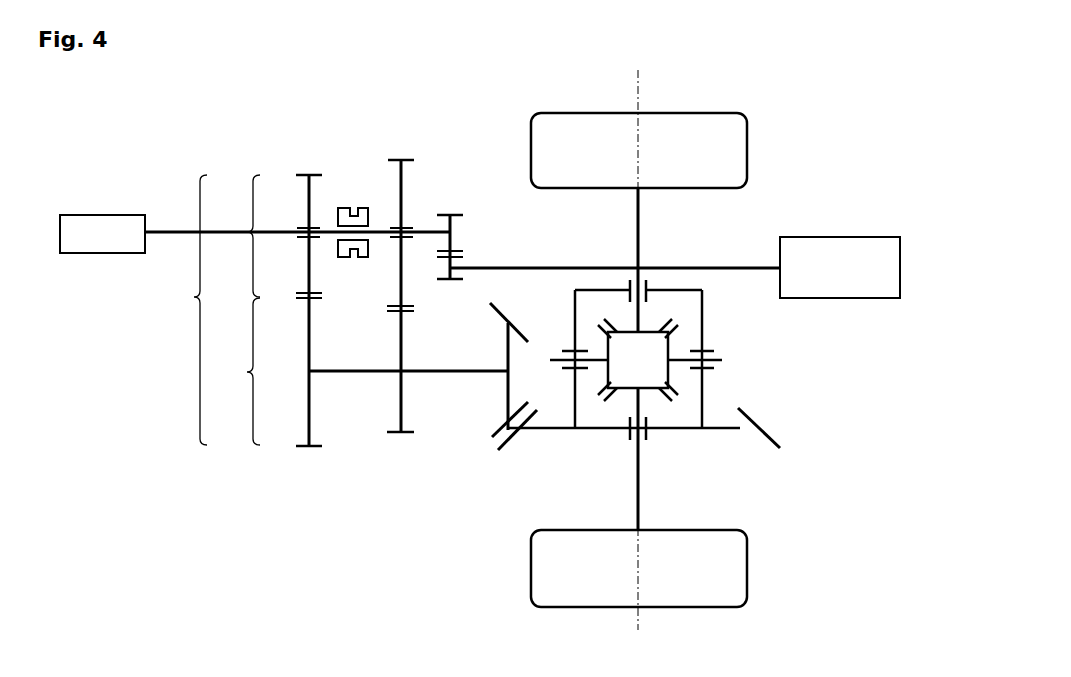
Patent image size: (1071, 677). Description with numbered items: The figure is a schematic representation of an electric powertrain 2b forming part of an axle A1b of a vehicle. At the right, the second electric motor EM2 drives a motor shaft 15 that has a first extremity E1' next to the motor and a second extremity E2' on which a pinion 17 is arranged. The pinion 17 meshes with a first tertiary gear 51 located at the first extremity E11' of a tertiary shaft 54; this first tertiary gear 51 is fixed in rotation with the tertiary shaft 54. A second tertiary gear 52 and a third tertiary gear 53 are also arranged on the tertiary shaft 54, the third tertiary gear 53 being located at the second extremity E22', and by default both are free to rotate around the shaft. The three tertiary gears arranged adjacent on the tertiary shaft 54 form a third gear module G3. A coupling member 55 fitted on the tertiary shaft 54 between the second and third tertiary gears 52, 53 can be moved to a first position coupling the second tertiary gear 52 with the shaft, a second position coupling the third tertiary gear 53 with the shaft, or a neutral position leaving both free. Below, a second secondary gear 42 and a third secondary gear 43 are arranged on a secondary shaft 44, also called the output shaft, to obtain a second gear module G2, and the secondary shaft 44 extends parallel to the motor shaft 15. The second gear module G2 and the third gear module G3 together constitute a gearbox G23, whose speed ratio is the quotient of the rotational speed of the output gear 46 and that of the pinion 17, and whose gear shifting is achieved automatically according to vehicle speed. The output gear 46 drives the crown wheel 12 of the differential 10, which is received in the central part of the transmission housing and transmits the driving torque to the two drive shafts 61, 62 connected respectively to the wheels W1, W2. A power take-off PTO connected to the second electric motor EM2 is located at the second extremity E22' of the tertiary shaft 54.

The differential 10 is at (768, 374).
The crown wheel 12 is at (732, 430).
The motor shaft 15 is at (558, 268).
The pinion 17 is at (462, 279).
The electric powertrain 2b is at (871, 407).
The second secondary gear 42 is at (400, 403).
The third secondary gear 43 is at (303, 413).
The secondary shaft 44 is at (357, 373).
The output gear 46 is at (505, 392).
The first tertiary gear 51 is at (455, 222).
The second tertiary gear 52 is at (405, 195).
The third tertiary gear 53 is at (305, 196).
The tertiary shaft 54 is at (328, 232).
The coupling member 55 is at (355, 258).
The drive shaft 61 is at (640, 470).
The drive shaft 62 is at (642, 207).
The axle A1b is at (664, 350).
The wheel W1 is at (747, 556).
The wheel W2 is at (747, 140).
The first extremity E1' is at (758, 233).
The second extremity E2' is at (532, 297).
The first extremity E11' is at (474, 210).
The second extremity E22' is at (288, 191).
The second gear module G2 is at (236, 371).
The third gear module G3 is at (236, 236).
The gearbox G23 is at (177, 310).
The power take-off PTO is at (102, 234).
The second electric motor EM2 is at (840, 267).